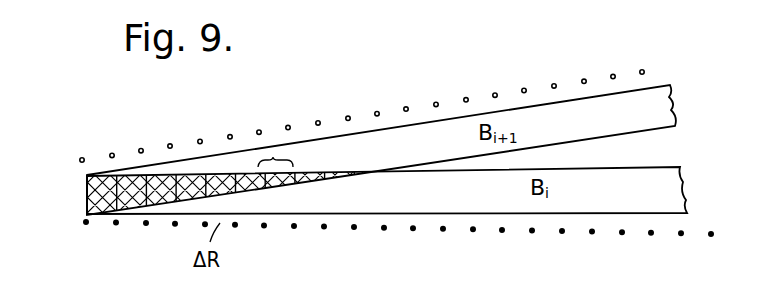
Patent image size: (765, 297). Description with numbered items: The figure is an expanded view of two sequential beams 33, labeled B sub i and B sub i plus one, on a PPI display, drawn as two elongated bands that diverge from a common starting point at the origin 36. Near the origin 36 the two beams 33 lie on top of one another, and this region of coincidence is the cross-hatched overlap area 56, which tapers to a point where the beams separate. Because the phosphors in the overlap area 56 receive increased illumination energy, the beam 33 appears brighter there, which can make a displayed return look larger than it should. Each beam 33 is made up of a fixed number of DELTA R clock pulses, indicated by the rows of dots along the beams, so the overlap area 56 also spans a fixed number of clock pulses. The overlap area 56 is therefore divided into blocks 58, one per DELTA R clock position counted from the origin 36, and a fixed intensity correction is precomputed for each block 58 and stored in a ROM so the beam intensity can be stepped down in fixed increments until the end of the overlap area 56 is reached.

The beam 33 is at (563, 116).
The origin 36 is at (87, 197).
The overlap area 56 is at (162, 178).
The block 58 is at (273, 157).